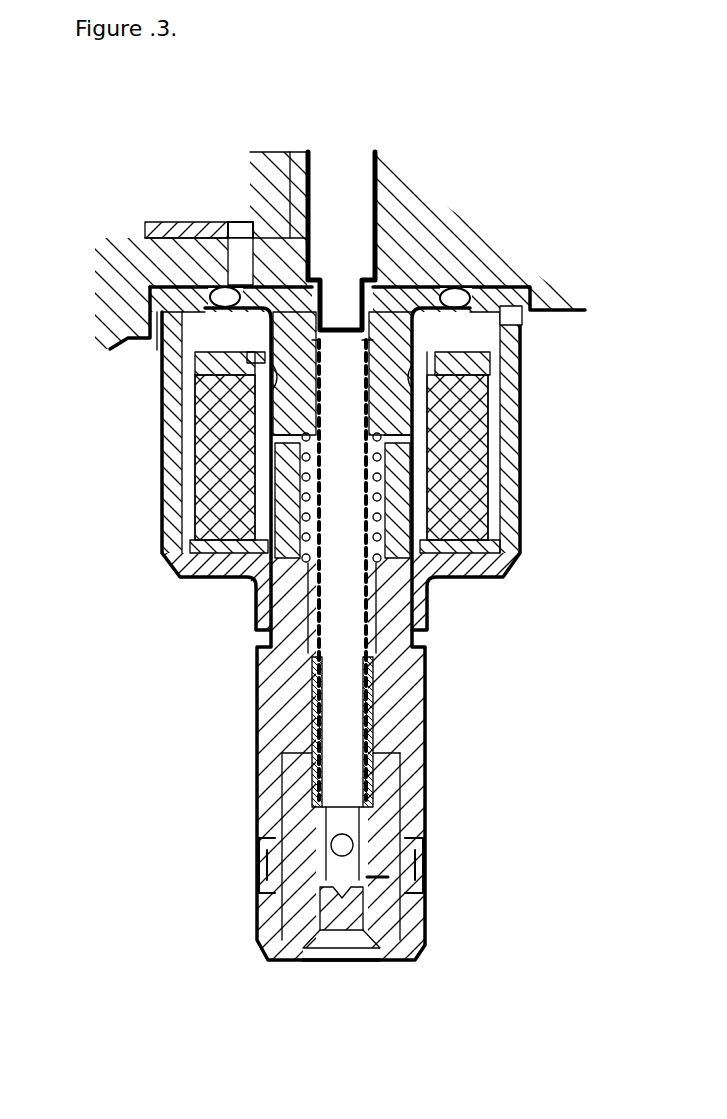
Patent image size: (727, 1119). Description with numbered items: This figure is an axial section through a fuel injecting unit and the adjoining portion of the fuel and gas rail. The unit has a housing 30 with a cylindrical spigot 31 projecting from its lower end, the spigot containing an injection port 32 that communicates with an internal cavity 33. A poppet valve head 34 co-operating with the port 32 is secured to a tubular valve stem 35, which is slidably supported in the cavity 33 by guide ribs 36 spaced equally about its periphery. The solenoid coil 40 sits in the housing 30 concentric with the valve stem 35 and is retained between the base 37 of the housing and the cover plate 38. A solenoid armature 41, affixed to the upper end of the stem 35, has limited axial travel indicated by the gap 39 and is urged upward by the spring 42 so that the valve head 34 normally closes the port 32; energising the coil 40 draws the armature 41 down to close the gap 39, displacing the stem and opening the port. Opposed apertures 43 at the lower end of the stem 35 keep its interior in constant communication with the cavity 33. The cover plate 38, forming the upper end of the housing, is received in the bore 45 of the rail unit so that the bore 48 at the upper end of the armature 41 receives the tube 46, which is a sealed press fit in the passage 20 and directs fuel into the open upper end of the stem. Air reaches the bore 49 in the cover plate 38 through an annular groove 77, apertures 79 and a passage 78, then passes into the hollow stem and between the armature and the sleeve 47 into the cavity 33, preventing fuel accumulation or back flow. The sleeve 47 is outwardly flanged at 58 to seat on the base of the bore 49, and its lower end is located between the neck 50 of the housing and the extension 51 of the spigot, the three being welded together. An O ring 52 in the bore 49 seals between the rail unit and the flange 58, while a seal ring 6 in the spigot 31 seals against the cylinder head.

The passage 20 is at (340, 178).
The annular groove 77 is at (233, 233).
The passage 78 is at (227, 256).
The apertures 79 is at (238, 225).
The tube 46 is at (366, 304).
The bore 48 is at (420, 300).
The bore 49 is at (460, 288).
The O ring 52 is at (485, 281).
The cover plate 38 is at (488, 321).
The flange 58 is at (452, 316).
The bore 45 is at (156, 352).
The housing 30 is at (161, 491).
The base 37 is at (197, 579).
The gap 39 is at (416, 441).
The solenoid coil 40 is at (450, 456).
The sleeve 47 is at (397, 387).
The solenoid armature 41 is at (396, 415).
The spring 42 is at (374, 518).
The extension 51 is at (388, 578).
The neck 50 is at (430, 606).
The tubular valve stem 35 is at (315, 650).
The cylindrical spigot 31 is at (255, 747).
The guide ribs 36 is at (308, 808).
The seal ring 6 is at (255, 866).
The apertures 43 is at (352, 843).
The internal cavity 33 is at (320, 915).
The injection port 32 is at (398, 943).
The poppet valve head 34 is at (349, 963).